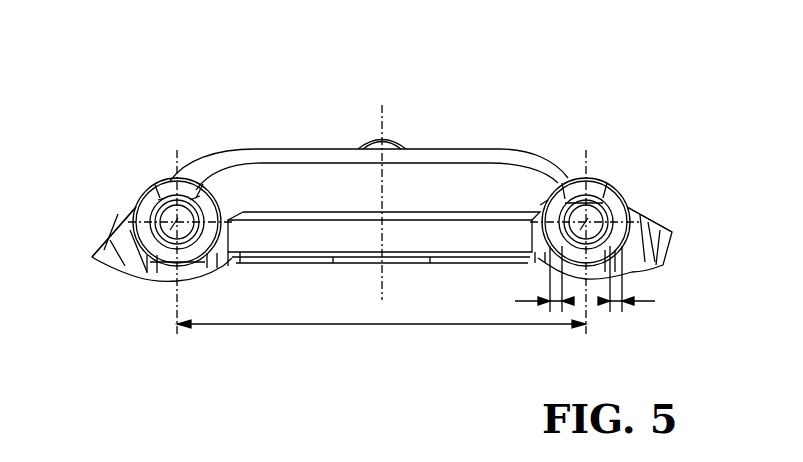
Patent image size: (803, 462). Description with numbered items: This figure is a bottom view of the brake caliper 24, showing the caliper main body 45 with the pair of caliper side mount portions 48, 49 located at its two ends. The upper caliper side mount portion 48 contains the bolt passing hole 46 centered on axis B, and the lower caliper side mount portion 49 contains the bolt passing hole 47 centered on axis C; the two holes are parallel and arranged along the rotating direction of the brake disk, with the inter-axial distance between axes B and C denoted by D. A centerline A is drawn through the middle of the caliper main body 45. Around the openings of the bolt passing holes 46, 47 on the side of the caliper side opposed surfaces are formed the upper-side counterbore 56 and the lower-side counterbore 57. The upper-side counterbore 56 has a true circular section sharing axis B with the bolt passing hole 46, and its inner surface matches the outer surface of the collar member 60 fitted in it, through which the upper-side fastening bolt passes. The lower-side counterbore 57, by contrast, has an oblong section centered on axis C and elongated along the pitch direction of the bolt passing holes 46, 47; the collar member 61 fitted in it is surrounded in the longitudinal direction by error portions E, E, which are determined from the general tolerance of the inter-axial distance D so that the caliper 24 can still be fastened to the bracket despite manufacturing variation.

The caliper main body 45 is at (467, 148).
The brake caliper 24 is at (382, 155).
The bolt passing hole 46 is at (163, 203).
The bolt passing hole 47 is at (602, 192).
The caliper side mount portion 48 is at (140, 190).
The caliper side mount portion 49 is at (620, 194).
The upper-side counterbore 56 is at (198, 192).
The lower-side counterbore 57 is at (576, 190).
The collar member 60 is at (208, 262).
The collar member 61 is at (541, 204).
The center axis A is at (382, 105).
The axis B is at (154, 252).
The axis C is at (628, 213).
The inter-axial distance D is at (472, 326).
The error portion E is at (518, 301).